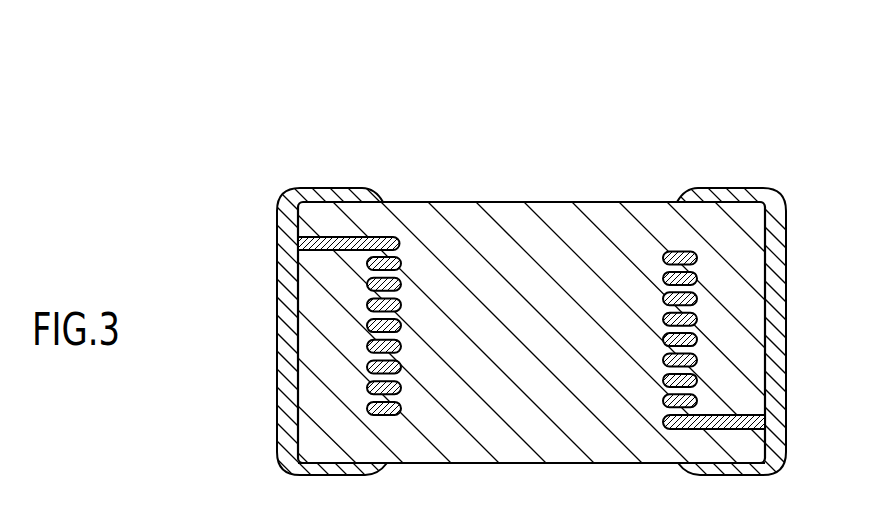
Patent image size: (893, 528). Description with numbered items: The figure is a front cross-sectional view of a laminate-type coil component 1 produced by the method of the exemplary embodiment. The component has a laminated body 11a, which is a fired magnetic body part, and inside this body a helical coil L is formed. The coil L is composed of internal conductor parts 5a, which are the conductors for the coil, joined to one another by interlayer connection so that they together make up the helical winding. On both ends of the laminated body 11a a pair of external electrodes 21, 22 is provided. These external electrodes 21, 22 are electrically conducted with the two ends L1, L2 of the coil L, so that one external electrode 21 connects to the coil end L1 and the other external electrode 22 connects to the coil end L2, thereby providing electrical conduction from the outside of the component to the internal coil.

The laminate-type coil component 1 is at (730, 111).
The internal conductor part 5a is at (662, 277).
The laminated body 11a is at (556, 464).
The external electrode 21 is at (278, 320).
The external electrode 22 is at (777, 320).
The coil L is at (531, 287).
The end of the coil L1 is at (345, 237).
The end of the coil L2 is at (722, 430).